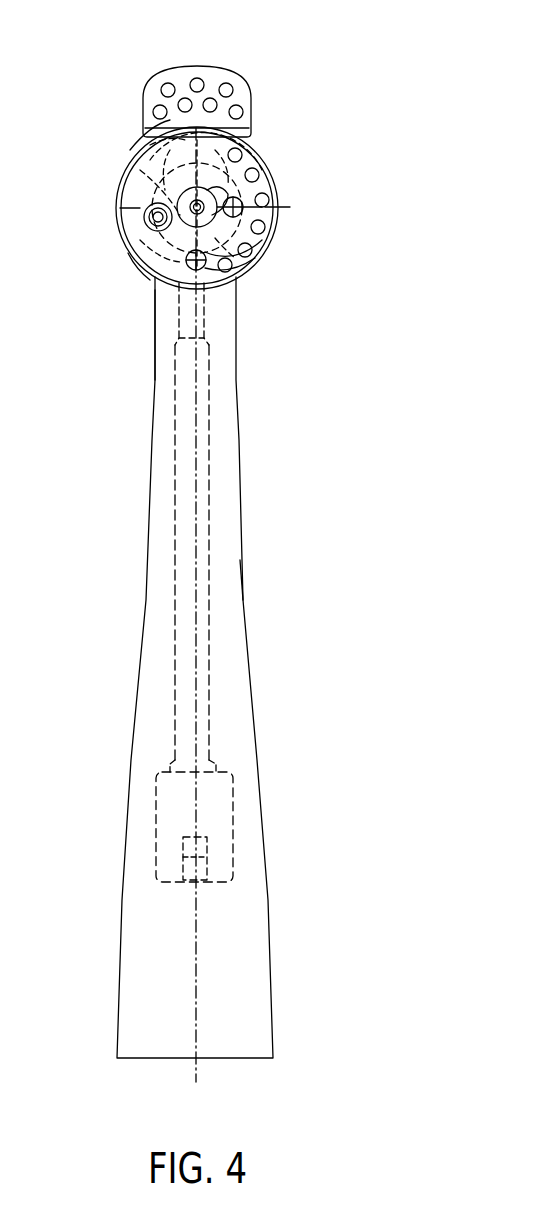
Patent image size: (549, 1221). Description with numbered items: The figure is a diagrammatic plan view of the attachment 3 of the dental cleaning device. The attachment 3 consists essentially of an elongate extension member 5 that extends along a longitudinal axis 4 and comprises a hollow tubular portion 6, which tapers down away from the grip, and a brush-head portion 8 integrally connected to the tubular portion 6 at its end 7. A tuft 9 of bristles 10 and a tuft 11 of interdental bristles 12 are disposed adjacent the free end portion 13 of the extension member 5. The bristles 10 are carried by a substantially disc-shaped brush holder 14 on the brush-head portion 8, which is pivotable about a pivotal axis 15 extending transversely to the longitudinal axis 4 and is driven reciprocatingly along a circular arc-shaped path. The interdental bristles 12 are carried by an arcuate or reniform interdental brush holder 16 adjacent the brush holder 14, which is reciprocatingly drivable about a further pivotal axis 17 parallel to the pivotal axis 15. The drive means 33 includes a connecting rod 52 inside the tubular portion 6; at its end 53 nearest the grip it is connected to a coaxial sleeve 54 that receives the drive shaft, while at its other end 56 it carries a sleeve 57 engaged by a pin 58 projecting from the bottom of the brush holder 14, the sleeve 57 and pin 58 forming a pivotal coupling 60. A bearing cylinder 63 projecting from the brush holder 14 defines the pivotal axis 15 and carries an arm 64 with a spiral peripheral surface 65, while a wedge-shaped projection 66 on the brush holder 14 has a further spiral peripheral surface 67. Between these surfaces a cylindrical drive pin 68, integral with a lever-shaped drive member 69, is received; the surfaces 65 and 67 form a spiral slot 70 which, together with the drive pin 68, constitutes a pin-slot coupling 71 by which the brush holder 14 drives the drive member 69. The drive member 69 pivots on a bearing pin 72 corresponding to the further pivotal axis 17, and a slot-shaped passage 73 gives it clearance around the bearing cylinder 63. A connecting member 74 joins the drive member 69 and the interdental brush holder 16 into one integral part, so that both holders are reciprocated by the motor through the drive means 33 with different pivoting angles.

The attachment 3 is at (328, 480).
The longitudinal axis 4 is at (192, 1078).
The extension member 5 is at (141, 613).
The tubular portion 6 is at (228, 600).
The end of the tubular portion 7 is at (150, 280).
The brush-head portion 8 is at (145, 266).
The tuft of bristles 9 is at (260, 250).
The bristles 10 is at (240, 272).
The tuft of interdental bristles 11 is at (221, 67).
The interdental bristles 12 is at (197, 79).
The free end portion 13 is at (165, 112).
The brush holder 14 is at (150, 150).
The pivotal axis 15 is at (177, 203).
The interdental brush holder 16 is at (172, 77).
The further pivotal axis 17 is at (156, 298).
The drive means 33 is at (170, 338).
The connecting rod 52 is at (178, 505).
The end of the connecting rod 53 is at (210, 740).
The coaxial sleeve 54 is at (226, 830).
The other end of the connecting rod 56 is at (145, 250).
The sleeve 57 is at (145, 213).
The pin 58 is at (150, 220).
The pivotal coupling 60 is at (130, 240).
The bearing cylinder 63 is at (165, 175).
The arm 64 is at (241, 126).
The peripheral surface 65 is at (265, 180).
The wedge-shaped projection 66 is at (265, 252).
The peripheral surface 67 is at (270, 225).
The drive pin 68 is at (270, 207).
The drive member 69 is at (250, 268).
The slot 70 is at (240, 155).
The pin-slot coupling 71 is at (220, 300).
The bearing pin 72 is at (200, 272).
The slot-shaped passage 73 is at (135, 172).
The connecting member 74 is at (150, 140).